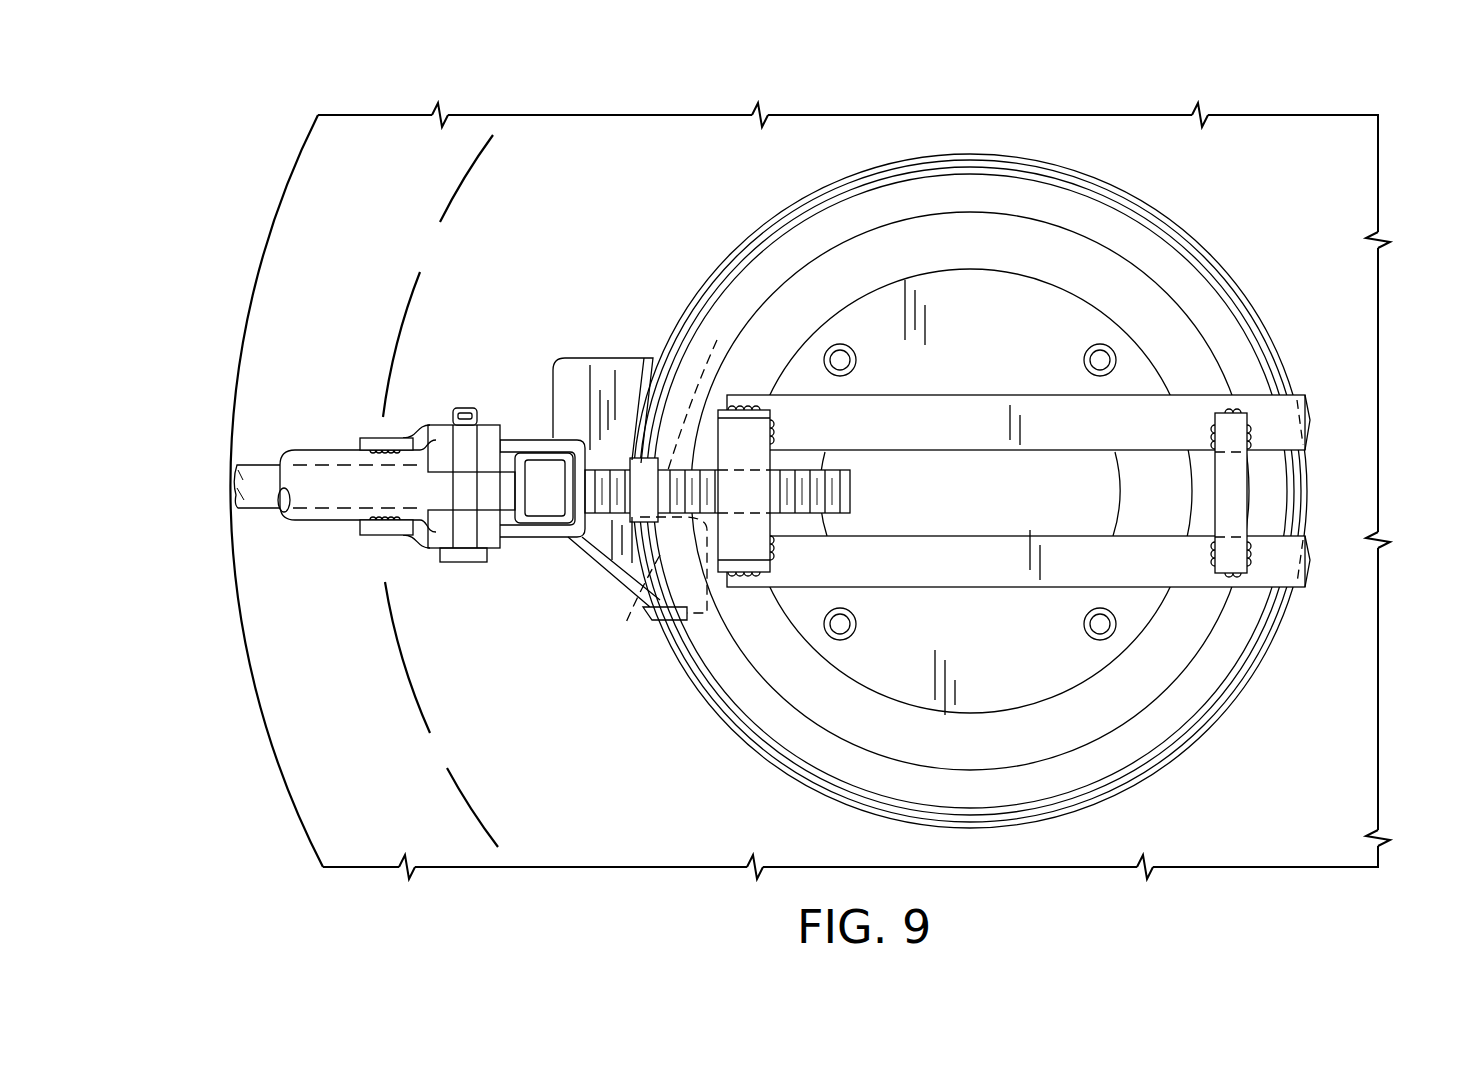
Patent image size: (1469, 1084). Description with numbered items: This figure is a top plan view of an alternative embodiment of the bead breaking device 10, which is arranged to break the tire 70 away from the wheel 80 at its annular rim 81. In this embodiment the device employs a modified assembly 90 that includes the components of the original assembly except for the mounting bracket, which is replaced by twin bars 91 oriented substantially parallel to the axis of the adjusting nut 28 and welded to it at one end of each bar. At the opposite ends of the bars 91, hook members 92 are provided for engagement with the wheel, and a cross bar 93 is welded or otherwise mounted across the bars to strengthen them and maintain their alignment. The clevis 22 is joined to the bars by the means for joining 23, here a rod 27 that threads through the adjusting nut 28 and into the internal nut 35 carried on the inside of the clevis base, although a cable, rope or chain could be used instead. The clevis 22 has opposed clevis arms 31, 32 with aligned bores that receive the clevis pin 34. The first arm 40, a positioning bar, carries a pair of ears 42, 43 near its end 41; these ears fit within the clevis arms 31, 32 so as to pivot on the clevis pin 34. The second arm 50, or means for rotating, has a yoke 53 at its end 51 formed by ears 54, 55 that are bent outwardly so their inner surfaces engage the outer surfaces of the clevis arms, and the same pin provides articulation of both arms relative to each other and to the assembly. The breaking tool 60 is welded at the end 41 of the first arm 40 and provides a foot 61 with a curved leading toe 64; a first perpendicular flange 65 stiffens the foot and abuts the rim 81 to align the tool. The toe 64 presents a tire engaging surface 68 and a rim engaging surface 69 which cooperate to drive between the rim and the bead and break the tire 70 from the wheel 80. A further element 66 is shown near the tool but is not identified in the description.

The bead breaking device 10 is at (238, 785).
The clevis 22 is at (548, 540).
The means for joining 23 is at (710, 448).
The rod 27 is at (855, 488).
The adjusting nut 28 is at (747, 572).
The clevis arm 31 is at (432, 545).
The clevis arm 32 is at (443, 445).
The clevis pin 34 is at (463, 407).
The internal nut 35 is at (540, 452).
The first arm 40 is at (265, 510).
The end of first arm 41 is at (505, 522).
The ear 42 is at (466, 543).
The ear 43 is at (487, 455).
The second arm 50 is at (305, 448).
The end of second arm 51 is at (393, 485).
The yoke 53 is at (495, 562).
The ear 54 is at (380, 535).
The ear 55 is at (403, 437).
The breaking tool 60 is at (610, 345).
The foot 61 is at (570, 370).
The toe 64 is at (678, 555).
The first perpendicular flange 65 is at (650, 358).
The brace arm 66 is at (607, 580).
The tire engaging surface 68 is at (668, 660).
The rim engaging surface 69 is at (660, 473).
The tire 70 is at (268, 243).
The wheel 80 is at (790, 210).
The rim 81 is at (1240, 300).
The modified assembly 90 is at (758, 378).
The bars 91 is at (950, 405).
The hook members 92 is at (1305, 420).
The cross bar 93 is at (1228, 498).